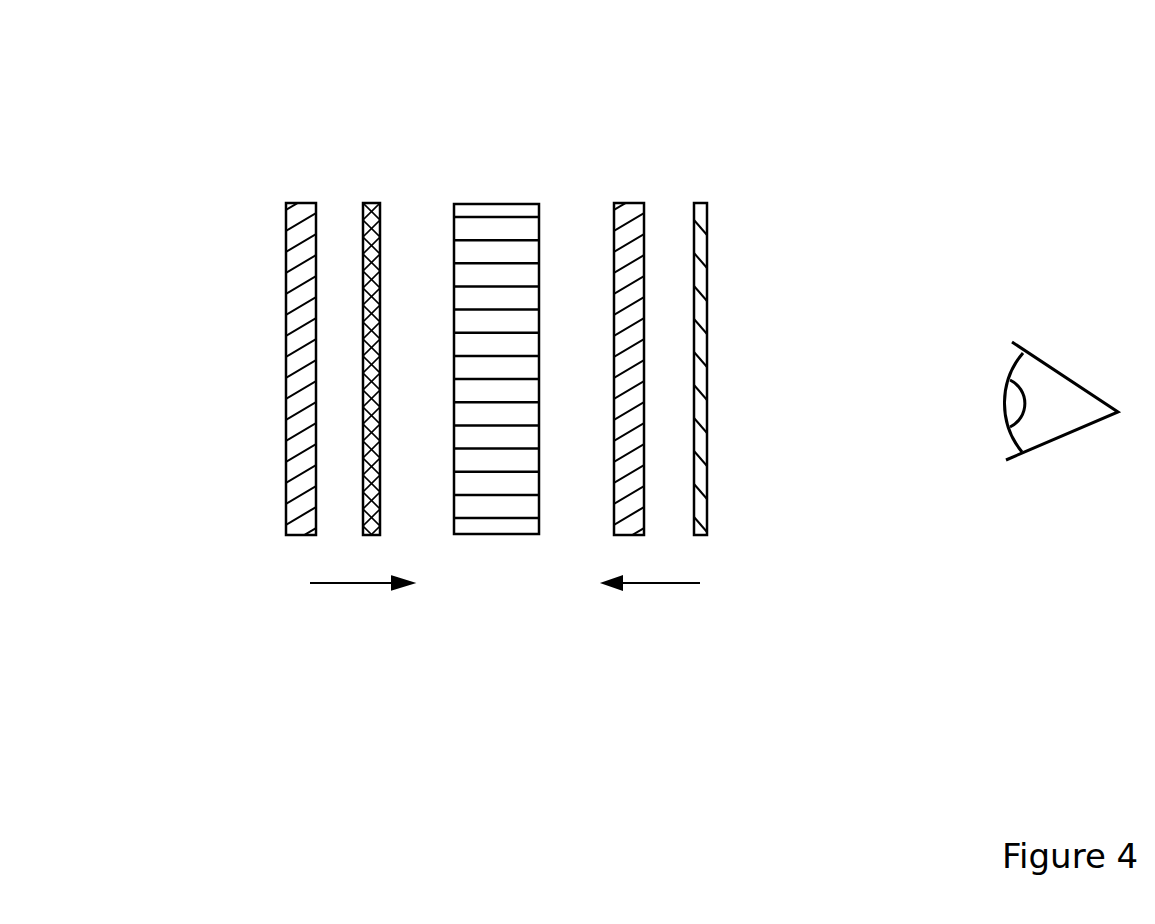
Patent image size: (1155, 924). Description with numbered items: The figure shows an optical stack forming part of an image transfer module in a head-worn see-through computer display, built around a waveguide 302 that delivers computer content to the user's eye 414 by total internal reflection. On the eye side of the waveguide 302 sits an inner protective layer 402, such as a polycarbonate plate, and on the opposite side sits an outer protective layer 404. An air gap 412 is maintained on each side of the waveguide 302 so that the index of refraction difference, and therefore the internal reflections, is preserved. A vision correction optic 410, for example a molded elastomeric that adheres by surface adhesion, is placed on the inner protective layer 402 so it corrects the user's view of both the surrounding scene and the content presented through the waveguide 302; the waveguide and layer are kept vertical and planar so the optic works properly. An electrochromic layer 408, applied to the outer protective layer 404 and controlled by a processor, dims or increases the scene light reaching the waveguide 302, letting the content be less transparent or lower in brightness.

The waveguide 302 is at (502, 180).
The inner protective layer 402 is at (645, 177).
The outer protective layer 404 is at (253, 340).
The electrochromic layer 408 is at (353, 172).
The vision correction optic 410 is at (728, 328).
The air gap 412 is at (435, 544).
The user's eye 414 is at (1042, 474).